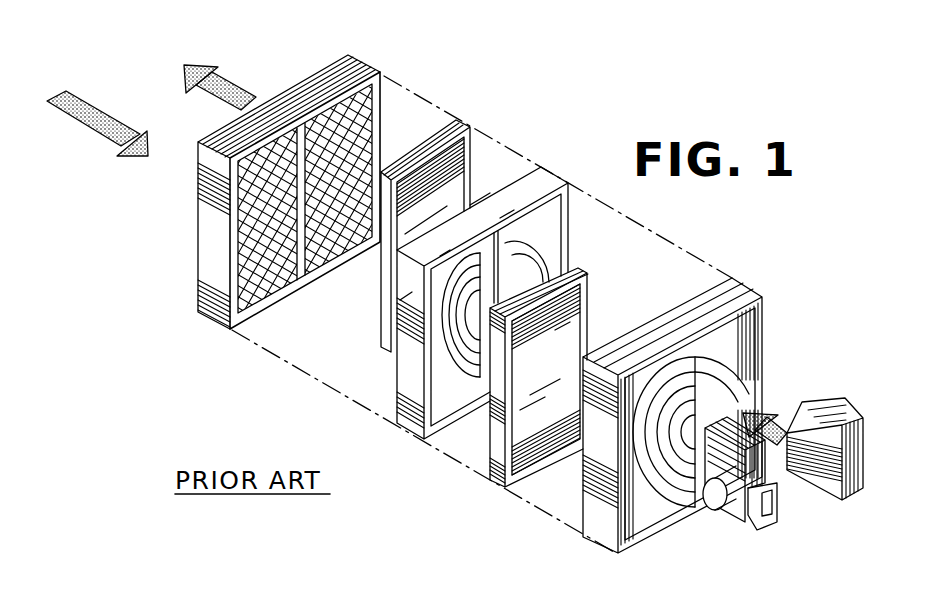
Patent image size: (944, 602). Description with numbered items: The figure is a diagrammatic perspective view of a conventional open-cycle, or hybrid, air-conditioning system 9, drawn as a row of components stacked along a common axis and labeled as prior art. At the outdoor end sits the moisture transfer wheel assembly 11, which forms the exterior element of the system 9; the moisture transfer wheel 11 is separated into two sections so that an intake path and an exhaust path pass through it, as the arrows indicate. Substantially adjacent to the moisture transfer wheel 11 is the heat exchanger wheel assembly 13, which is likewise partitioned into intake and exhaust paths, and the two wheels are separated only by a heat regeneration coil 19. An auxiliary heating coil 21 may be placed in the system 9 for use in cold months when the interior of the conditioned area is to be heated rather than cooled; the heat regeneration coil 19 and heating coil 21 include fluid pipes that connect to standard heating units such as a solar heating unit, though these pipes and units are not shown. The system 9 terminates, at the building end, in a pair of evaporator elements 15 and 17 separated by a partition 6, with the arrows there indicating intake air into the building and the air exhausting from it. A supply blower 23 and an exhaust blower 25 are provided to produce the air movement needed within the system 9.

The open-cycle air-conditioning system 9 is at (681, 233).
The partition 6 is at (325, 135).
The evaporator element 15 is at (384, 76).
The evaporator element 17 is at (208, 244).
The auxiliary heating coil 21 is at (455, 118).
The heat exchanger wheel assembly 13 is at (568, 228).
The heat regeneration coil 19 is at (588, 303).
The moisture transfer wheel assembly 11 is at (751, 323).
The supply blower 23 is at (827, 403).
The exhaust blower 25 is at (743, 517).